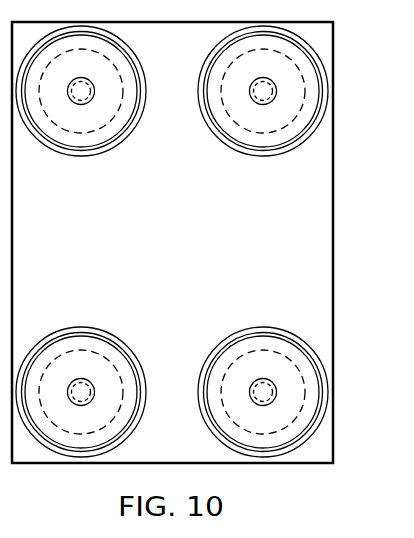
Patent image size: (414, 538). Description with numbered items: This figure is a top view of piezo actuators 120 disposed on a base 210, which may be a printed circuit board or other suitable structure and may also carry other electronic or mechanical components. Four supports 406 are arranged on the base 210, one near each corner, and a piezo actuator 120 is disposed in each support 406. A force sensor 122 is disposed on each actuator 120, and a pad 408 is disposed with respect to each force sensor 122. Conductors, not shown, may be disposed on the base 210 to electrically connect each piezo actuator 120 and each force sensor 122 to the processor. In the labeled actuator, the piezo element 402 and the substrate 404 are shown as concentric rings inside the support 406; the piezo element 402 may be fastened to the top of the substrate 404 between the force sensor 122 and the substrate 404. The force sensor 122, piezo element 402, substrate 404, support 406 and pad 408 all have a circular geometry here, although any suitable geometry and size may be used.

The base 210 is at (309, 217).
The piezo actuator 120 is at (172, 241).
The force sensor 122 is at (277, 388).
The piezo element 402 is at (236, 428).
The substrate 404 is at (218, 412).
The support 406 is at (212, 357).
The pad 408 is at (231, 348).